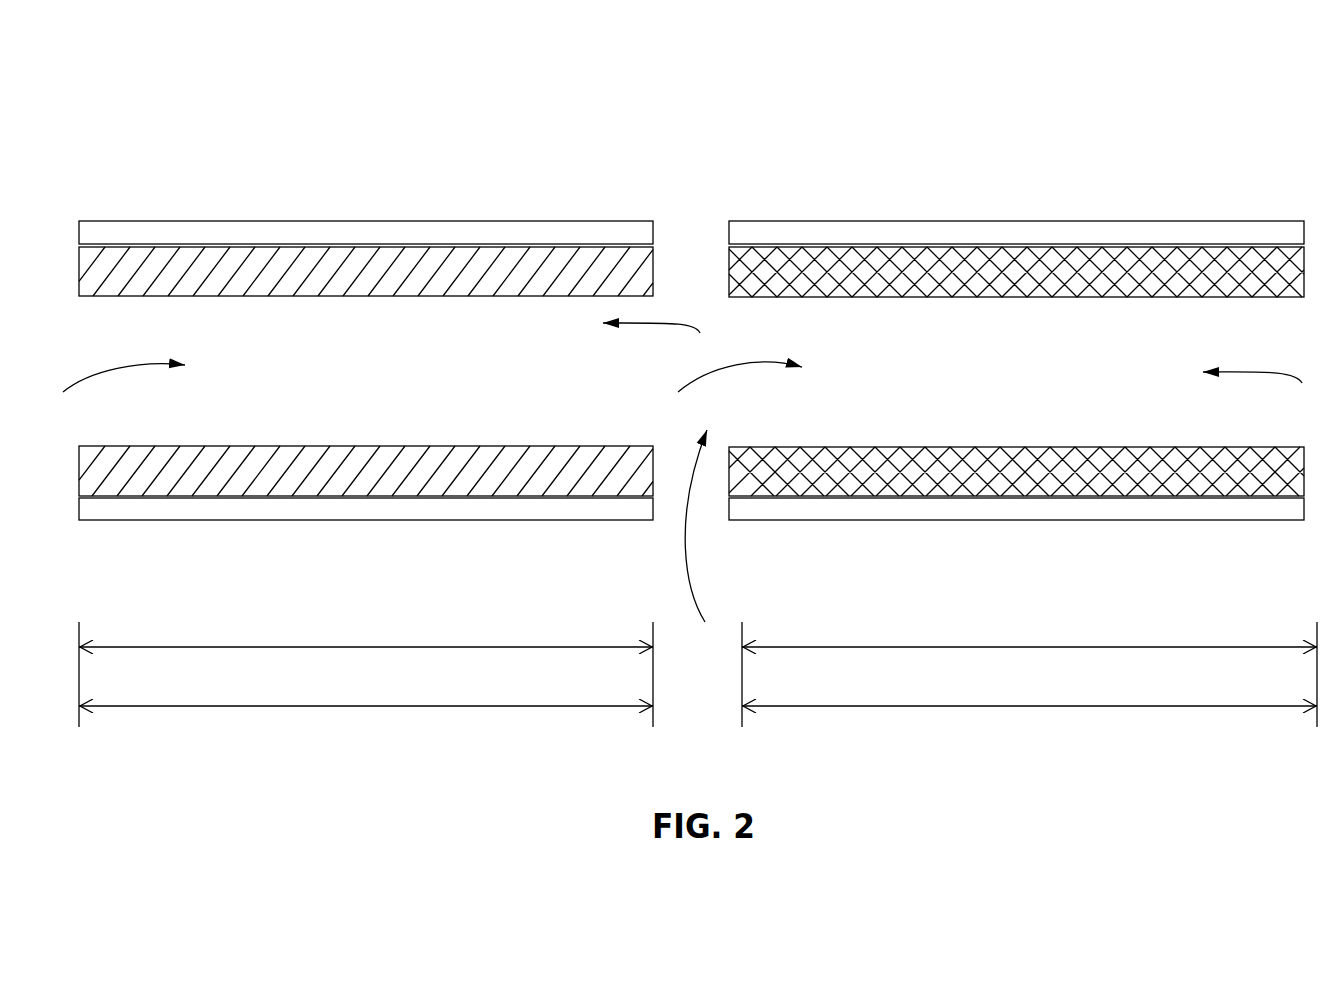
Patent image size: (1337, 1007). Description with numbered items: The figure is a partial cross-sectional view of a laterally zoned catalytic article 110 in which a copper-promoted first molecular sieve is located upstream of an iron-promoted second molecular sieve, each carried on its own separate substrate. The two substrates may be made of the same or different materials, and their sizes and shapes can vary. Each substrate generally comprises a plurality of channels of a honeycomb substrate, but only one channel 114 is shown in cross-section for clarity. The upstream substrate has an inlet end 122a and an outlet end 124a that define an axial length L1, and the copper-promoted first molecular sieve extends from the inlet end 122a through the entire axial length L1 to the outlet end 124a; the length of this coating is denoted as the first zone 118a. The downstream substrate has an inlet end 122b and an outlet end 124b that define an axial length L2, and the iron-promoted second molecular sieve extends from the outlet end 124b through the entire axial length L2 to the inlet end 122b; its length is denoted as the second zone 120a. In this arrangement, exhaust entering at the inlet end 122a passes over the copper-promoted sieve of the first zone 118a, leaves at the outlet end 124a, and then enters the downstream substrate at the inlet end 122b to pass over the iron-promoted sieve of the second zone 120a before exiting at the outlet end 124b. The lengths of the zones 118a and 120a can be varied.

The laterally zoned catalytic article 110 is at (691, 178).
The channel 114 is at (706, 539).
The inlet end 122a is at (115, 371).
The inlet end 122b is at (740, 382).
The outlet end 124a is at (672, 325).
The outlet end 124b is at (1264, 364).
The first zone 118a is at (366, 674).
The second zone 120a is at (1029, 674).
The axial length L1 is at (366, 722).
The axial length L2 is at (1029, 723).